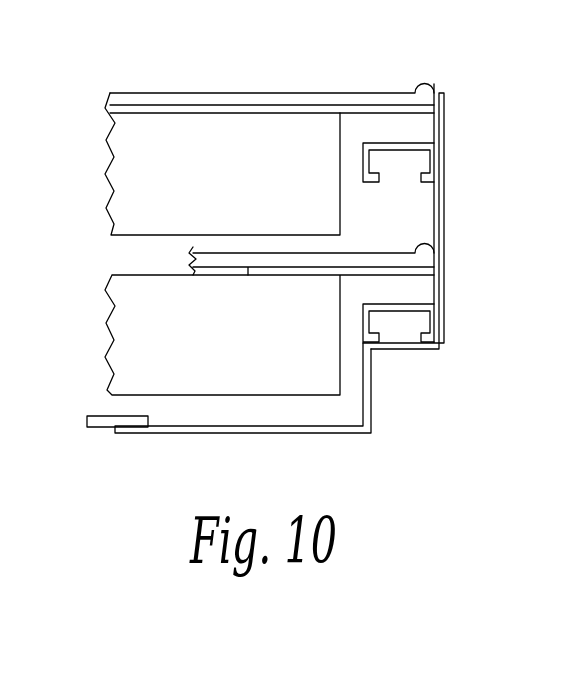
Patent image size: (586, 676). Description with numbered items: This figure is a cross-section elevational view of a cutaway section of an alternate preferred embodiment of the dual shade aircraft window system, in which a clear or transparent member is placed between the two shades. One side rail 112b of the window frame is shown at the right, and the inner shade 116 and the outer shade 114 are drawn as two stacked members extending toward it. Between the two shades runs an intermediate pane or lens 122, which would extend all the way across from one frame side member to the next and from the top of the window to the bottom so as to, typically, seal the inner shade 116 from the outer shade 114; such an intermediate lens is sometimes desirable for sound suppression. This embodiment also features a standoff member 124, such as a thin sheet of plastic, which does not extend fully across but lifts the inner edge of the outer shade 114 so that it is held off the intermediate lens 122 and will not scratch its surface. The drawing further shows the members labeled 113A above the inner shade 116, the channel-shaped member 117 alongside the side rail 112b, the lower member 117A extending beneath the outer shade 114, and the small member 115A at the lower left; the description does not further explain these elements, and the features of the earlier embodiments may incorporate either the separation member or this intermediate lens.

The top shelf plate 113A is at (254, 96).
The inner shade 116 is at (222, 181).
The upper channel rail 117 is at (402, 120).
The side rail 112b is at (446, 226).
The intermediate pane or lens 122 is at (354, 262).
The standoff member 124 is at (372, 276).
The outer shade 114 is at (222, 341).
The bottom bracket 117A is at (293, 437).
The bottom flange 115A is at (108, 428).